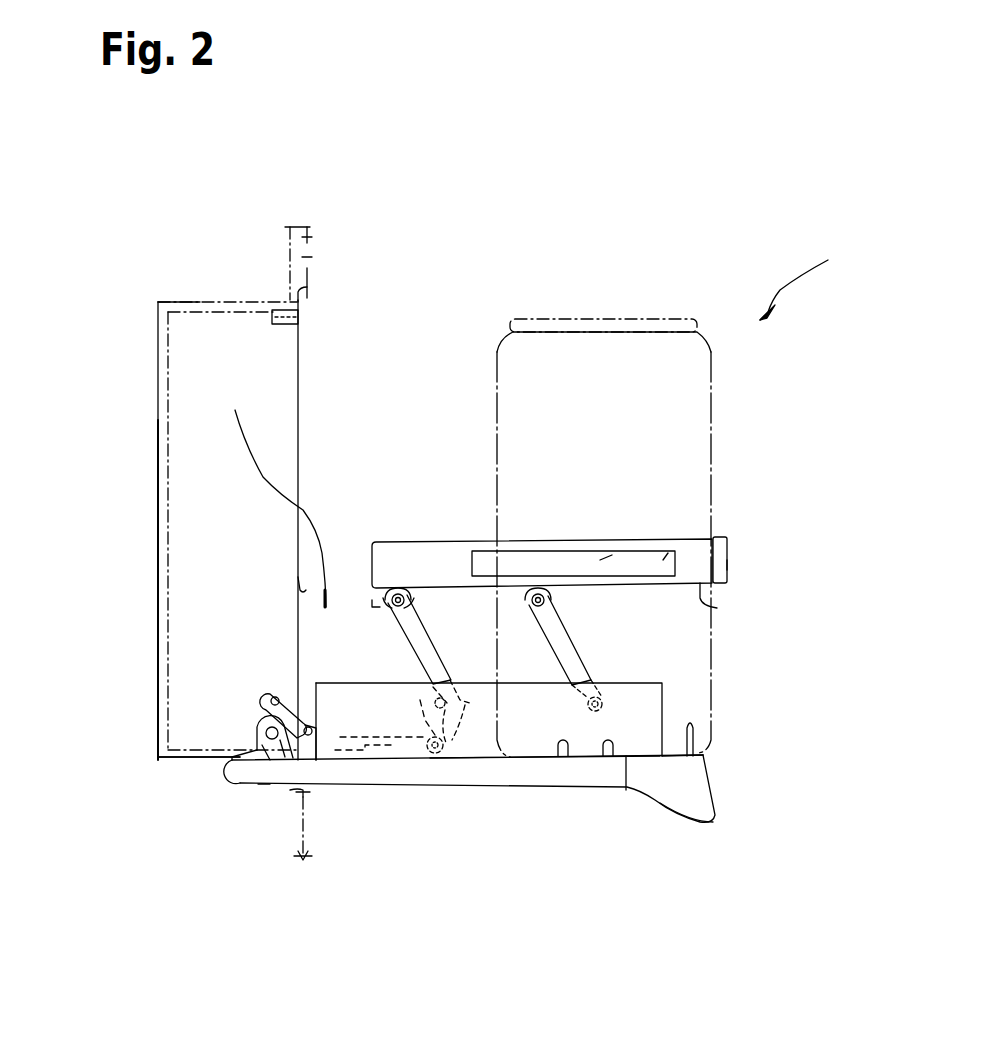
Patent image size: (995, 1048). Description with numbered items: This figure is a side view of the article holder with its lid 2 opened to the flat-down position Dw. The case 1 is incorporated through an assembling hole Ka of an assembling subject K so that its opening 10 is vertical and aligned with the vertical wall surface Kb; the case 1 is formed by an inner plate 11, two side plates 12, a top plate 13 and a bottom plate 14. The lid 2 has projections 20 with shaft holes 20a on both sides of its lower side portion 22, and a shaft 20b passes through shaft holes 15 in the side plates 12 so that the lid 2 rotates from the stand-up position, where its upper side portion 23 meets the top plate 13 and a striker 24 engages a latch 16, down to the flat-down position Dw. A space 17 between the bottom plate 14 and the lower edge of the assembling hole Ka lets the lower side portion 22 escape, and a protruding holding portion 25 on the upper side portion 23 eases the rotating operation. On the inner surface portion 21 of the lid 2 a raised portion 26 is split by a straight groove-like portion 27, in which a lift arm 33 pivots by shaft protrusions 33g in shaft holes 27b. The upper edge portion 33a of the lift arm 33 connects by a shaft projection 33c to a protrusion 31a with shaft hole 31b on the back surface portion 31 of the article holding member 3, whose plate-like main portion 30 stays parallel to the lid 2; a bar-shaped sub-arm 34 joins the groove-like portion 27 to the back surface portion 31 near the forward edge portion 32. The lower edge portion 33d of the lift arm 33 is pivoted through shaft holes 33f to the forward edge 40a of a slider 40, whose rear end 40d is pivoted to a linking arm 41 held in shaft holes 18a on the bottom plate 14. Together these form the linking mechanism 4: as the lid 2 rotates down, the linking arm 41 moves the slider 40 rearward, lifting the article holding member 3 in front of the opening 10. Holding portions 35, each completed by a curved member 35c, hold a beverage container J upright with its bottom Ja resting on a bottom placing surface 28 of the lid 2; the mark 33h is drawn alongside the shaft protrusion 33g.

The case 1 is at (158, 605).
The lid 2 is at (705, 808).
The article holding member 3 is at (727, 545).
The linking mechanism 4 is at (274, 495).
The opening 10 is at (300, 366).
The inner plate 11 is at (158, 492).
The side plate 12 is at (178, 413).
The top plate 13 is at (202, 302).
The bottom plate 14 is at (250, 750).
The shaft hole 15 is at (265, 782).
The latch 16 is at (277, 298).
The space 17 is at (293, 787).
The shaft hole 18a is at (272, 696).
The projection 20 is at (272, 752).
The shaft hole 20a is at (245, 752).
The shaft 20b is at (266, 752).
The inner surface portion 21 is at (560, 757).
The lower side portion 22 is at (285, 758).
The upper side portion 23 is at (708, 763).
The striker 24 is at (702, 736).
The protruding holding portion 25 is at (700, 820).
The raised portion 26 is at (507, 758).
The groove-like portion 27 is at (525, 758).
The shaft hole 27b is at (453, 758).
The bottom placing surface 28 is at (607, 756).
The plate-like main portion 30 is at (727, 562).
The back surface portion 31 is at (717, 608).
The protrusion 31a is at (407, 588).
The shaft hole 31b is at (397, 593).
The forward edge portion 32 is at (727, 572).
The lift arm 33 is at (433, 653).
The upper edge portion 33a is at (402, 588).
The shaft projection 33c is at (392, 608).
The lower edge portion 33d is at (410, 758).
The shaft hole 33f is at (397, 773).
The shaft protrusion 33g is at (453, 688).
The second link pivot 33h is at (538, 600).
The sub-arm 34 is at (563, 633).
The holding portion 35 is at (607, 557).
The curved member 35c is at (663, 560).
The slider 40 is at (360, 775).
The forward edge 40a is at (433, 758).
The rear end 40d is at (298, 577).
The linking arm 41 is at (268, 696).
The assembling subject K is at (310, 236).
The assembling hole Ka is at (307, 287).
The vertical wall surface Kb is at (310, 257).
The beverage container J is at (714, 362).
The bottom Ja is at (626, 790).
The flat-down position Dw is at (814, 278).